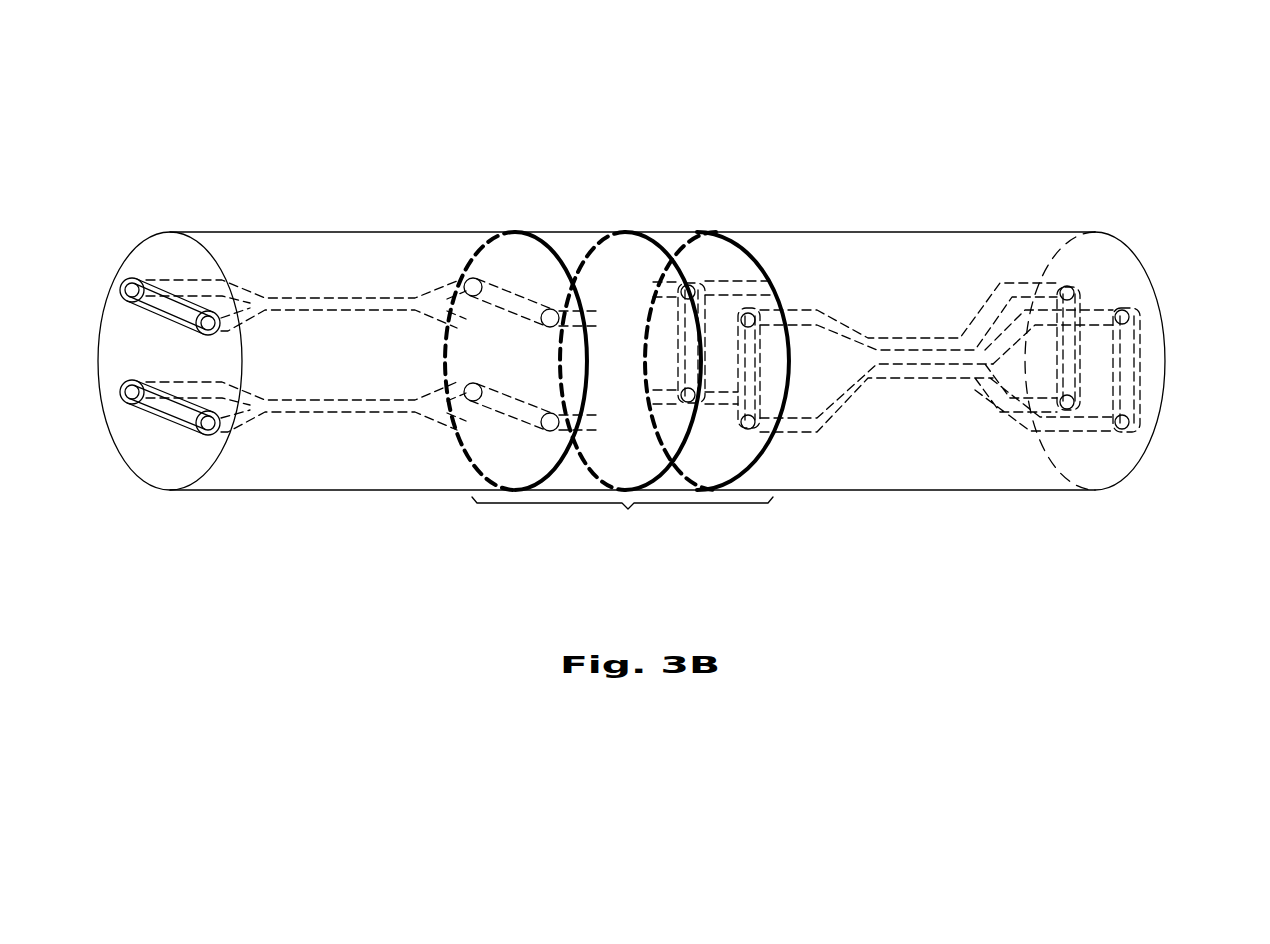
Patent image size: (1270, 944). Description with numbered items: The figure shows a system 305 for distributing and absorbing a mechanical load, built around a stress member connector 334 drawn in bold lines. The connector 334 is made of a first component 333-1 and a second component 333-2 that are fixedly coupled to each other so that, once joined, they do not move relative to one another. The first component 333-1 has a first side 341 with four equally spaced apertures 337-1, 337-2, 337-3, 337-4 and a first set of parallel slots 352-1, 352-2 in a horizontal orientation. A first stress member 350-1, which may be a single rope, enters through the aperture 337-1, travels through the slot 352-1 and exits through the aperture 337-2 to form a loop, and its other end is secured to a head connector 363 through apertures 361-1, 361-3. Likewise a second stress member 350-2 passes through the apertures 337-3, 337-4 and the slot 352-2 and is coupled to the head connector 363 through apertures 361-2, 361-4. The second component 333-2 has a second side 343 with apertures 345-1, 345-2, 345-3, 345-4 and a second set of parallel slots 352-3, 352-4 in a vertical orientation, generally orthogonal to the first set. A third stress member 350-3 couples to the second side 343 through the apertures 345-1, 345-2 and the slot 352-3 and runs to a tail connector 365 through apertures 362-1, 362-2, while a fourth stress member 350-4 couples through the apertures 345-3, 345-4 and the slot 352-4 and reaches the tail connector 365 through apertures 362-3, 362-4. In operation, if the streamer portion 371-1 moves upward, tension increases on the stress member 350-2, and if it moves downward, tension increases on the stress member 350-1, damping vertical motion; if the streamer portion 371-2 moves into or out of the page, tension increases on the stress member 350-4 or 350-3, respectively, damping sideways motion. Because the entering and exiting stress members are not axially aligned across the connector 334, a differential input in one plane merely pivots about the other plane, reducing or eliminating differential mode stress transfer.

The system 305 is at (188, 91).
The first component 333-1 is at (600, 255).
The second component 333-2 is at (660, 275).
The stress member connector 334 is at (622, 386).
The first aperture 337-1 is at (550, 311).
The second aperture 337-2 is at (476, 278).
The third aperture 337-3 is at (550, 432).
The fourth aperture 337-4 is at (470, 400).
The first side 341 is at (537, 362).
The second side 343 is at (728, 252).
The aperture 345-1 is at (746, 312).
The aperture 345-2 is at (754, 430).
The aperture 345-3 is at (700, 284).
The aperture 345-4 is at (688, 403).
The first stress member 350-1 is at (321, 303).
The second stress member 350-2 is at (338, 407).
The third stress member 350-3 is at (935, 370).
The fourth stress member 350-4 is at (887, 337).
The first slot 352-1 is at (517, 303).
The second slot 352-2 is at (525, 417).
The third slot 352-3 is at (770, 300).
The fourth slot 352-4 is at (680, 356).
The aperture 361-1 is at (213, 313).
The aperture 361-2 is at (208, 435).
The aperture 361-3 is at (128, 280).
The aperture 361-4 is at (130, 403).
The aperture 362-1 is at (1130, 311).
The aperture 362-2 is at (1130, 428).
The aperture 362-3 is at (1067, 285).
The aperture 362-4 is at (1067, 410).
The head connector 363 is at (105, 366).
The tail connector 365 is at (1106, 250).
The streamer portion 371-1 is at (378, 252).
The streamer portion 371-2 is at (845, 462).